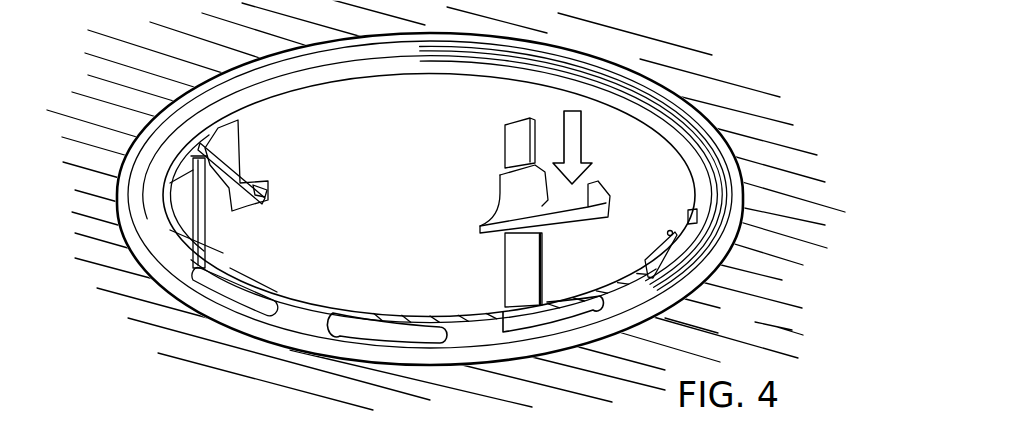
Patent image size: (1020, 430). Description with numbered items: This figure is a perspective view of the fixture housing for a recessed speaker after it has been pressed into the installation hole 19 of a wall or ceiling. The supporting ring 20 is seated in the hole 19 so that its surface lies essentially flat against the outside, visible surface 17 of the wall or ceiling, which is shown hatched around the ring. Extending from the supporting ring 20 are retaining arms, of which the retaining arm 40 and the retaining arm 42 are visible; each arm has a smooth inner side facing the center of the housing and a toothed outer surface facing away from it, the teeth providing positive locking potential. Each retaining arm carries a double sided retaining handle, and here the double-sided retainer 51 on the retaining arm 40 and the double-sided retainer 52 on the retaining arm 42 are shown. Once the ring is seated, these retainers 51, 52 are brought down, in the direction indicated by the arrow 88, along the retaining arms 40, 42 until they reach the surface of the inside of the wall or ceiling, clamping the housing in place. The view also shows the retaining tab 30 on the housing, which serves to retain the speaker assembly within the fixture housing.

The outside surface 17 is at (771, 324).
The installation hole 19 is at (455, 307).
The supporting ring 20 is at (282, 97).
The retaining tab 30 is at (587, 287).
The retaining arm 40 is at (503, 135).
The retaining arm 42 is at (220, 233).
The double sided retaining handle 51 is at (500, 188).
The double sided retaining handle 52 is at (240, 138).
The downward movement 88 is at (585, 157).